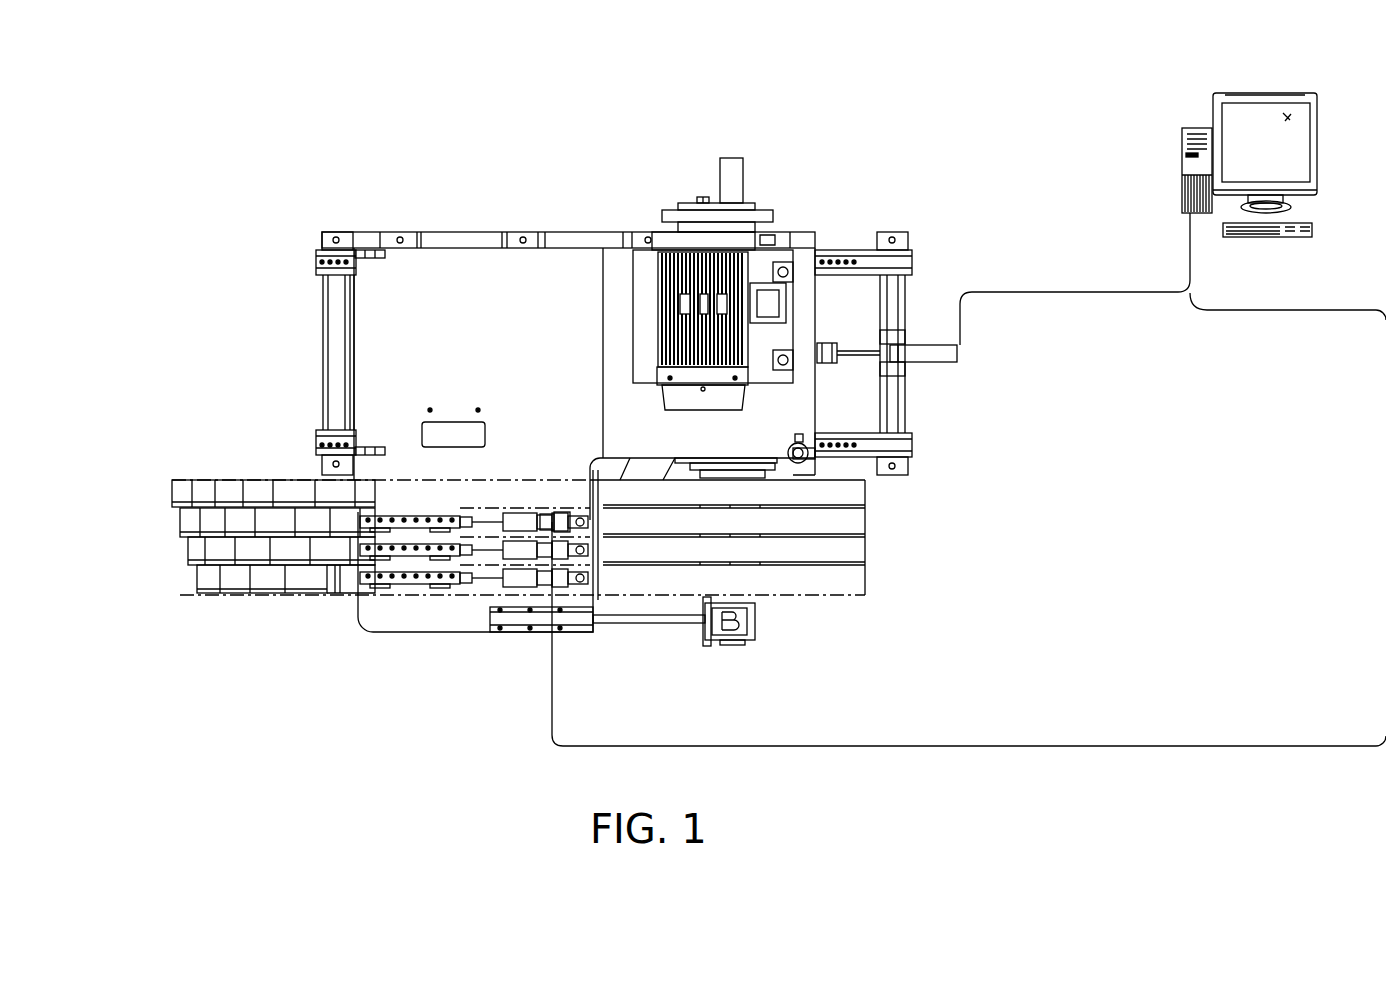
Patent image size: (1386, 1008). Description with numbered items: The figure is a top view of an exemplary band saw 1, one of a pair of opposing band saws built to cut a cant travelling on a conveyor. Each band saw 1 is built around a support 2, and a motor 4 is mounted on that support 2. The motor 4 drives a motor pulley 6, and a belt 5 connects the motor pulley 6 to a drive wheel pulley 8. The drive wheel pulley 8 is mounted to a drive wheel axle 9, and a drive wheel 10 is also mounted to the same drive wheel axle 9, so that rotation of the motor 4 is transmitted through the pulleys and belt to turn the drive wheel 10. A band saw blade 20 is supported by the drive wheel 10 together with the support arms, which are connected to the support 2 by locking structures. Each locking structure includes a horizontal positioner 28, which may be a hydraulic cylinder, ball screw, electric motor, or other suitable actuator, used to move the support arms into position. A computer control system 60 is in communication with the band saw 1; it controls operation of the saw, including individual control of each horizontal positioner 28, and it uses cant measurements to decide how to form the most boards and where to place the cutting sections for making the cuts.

The band saw 1 is at (903, 400).
The support 2 is at (323, 340).
The motor 4 is at (752, 400).
The belt 5 is at (778, 220).
The motor pulley 6 is at (668, 212).
The drive wheel pulley 8 is at (774, 206).
The drive wheel axle 9 is at (752, 637).
The drive wheel 10 is at (870, 504).
The band saw blade 20 is at (582, 527).
The horizontal positioner 28 is at (962, 363).
The computer control system 60 is at (1180, 130).